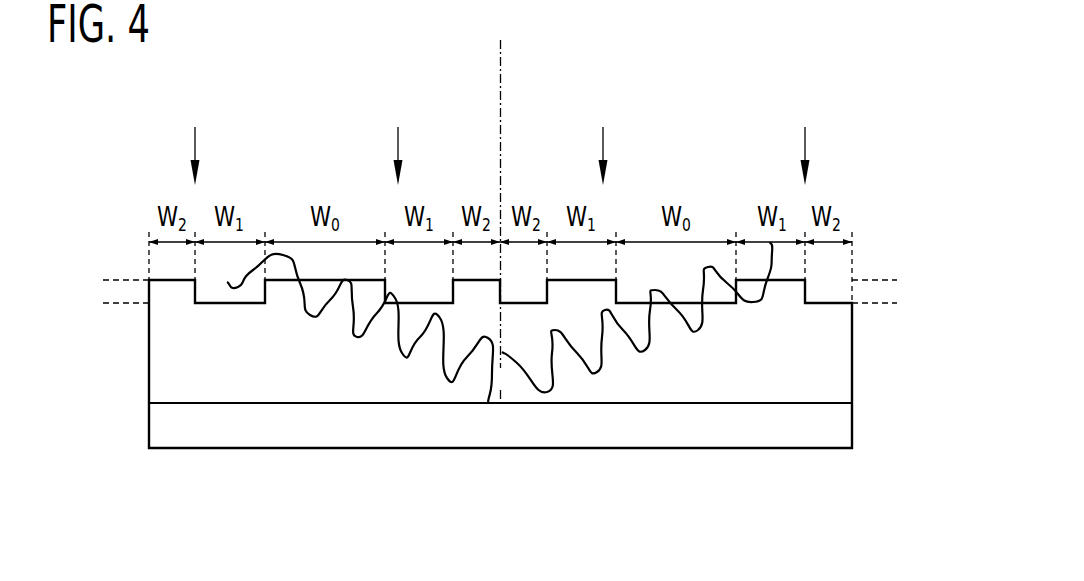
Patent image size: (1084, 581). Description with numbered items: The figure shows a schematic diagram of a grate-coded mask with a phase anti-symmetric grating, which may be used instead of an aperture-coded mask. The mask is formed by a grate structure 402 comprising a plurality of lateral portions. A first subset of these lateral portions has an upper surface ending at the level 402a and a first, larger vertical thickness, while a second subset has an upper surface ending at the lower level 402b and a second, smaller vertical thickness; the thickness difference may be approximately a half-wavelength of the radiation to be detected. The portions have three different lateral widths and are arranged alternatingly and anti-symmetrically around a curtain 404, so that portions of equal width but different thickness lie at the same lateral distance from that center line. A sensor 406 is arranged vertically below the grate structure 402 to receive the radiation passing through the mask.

The grate structure 402 is at (852, 378).
The upper surface of first subset of lateral portions 402a is at (128, 280).
The upper surface of second subset of lateral portions 402b is at (125, 303).
The curtain 404 is at (501, 68).
The sensor 406 is at (503, 436).